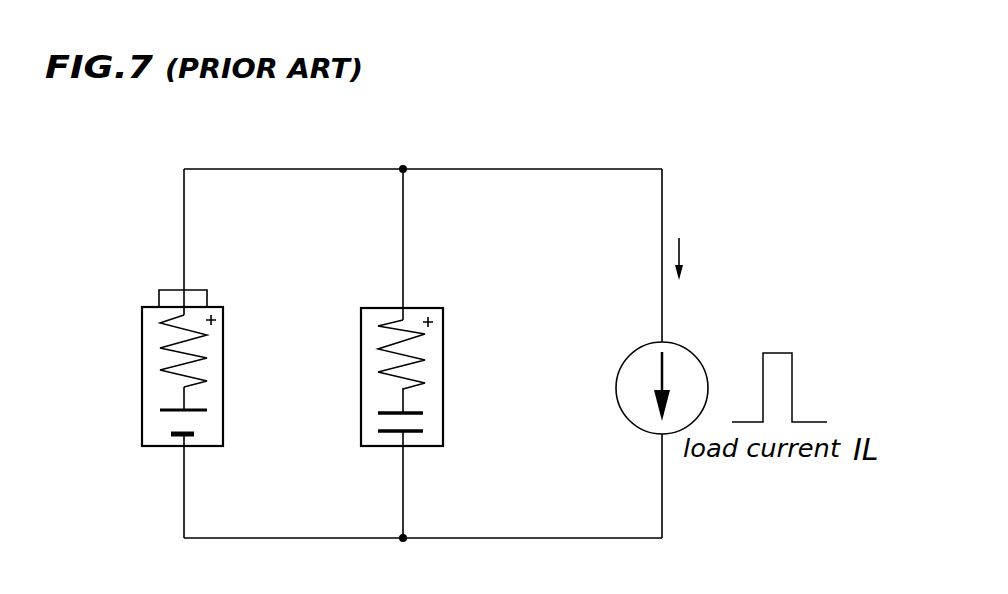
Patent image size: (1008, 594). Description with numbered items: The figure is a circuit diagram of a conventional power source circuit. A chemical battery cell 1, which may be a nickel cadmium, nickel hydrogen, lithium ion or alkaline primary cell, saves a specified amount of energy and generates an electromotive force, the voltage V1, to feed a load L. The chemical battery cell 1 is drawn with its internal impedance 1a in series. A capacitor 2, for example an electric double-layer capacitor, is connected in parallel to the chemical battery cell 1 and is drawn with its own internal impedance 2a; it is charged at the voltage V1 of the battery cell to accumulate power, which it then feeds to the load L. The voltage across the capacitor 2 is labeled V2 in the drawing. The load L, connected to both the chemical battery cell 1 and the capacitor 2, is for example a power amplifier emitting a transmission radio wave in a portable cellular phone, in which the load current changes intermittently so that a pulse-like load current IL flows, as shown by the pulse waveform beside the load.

The chemical battery cell 1 is at (269, 406).
The internal impedance 1a is at (198, 355).
The capacitor 2 is at (493, 384).
The internal impedance 2a is at (418, 357).
The load L is at (684, 345).
The load current IL is at (682, 242).
The voltage V1 is at (290, 168).
The capacitor voltage V2 is at (403, 259).